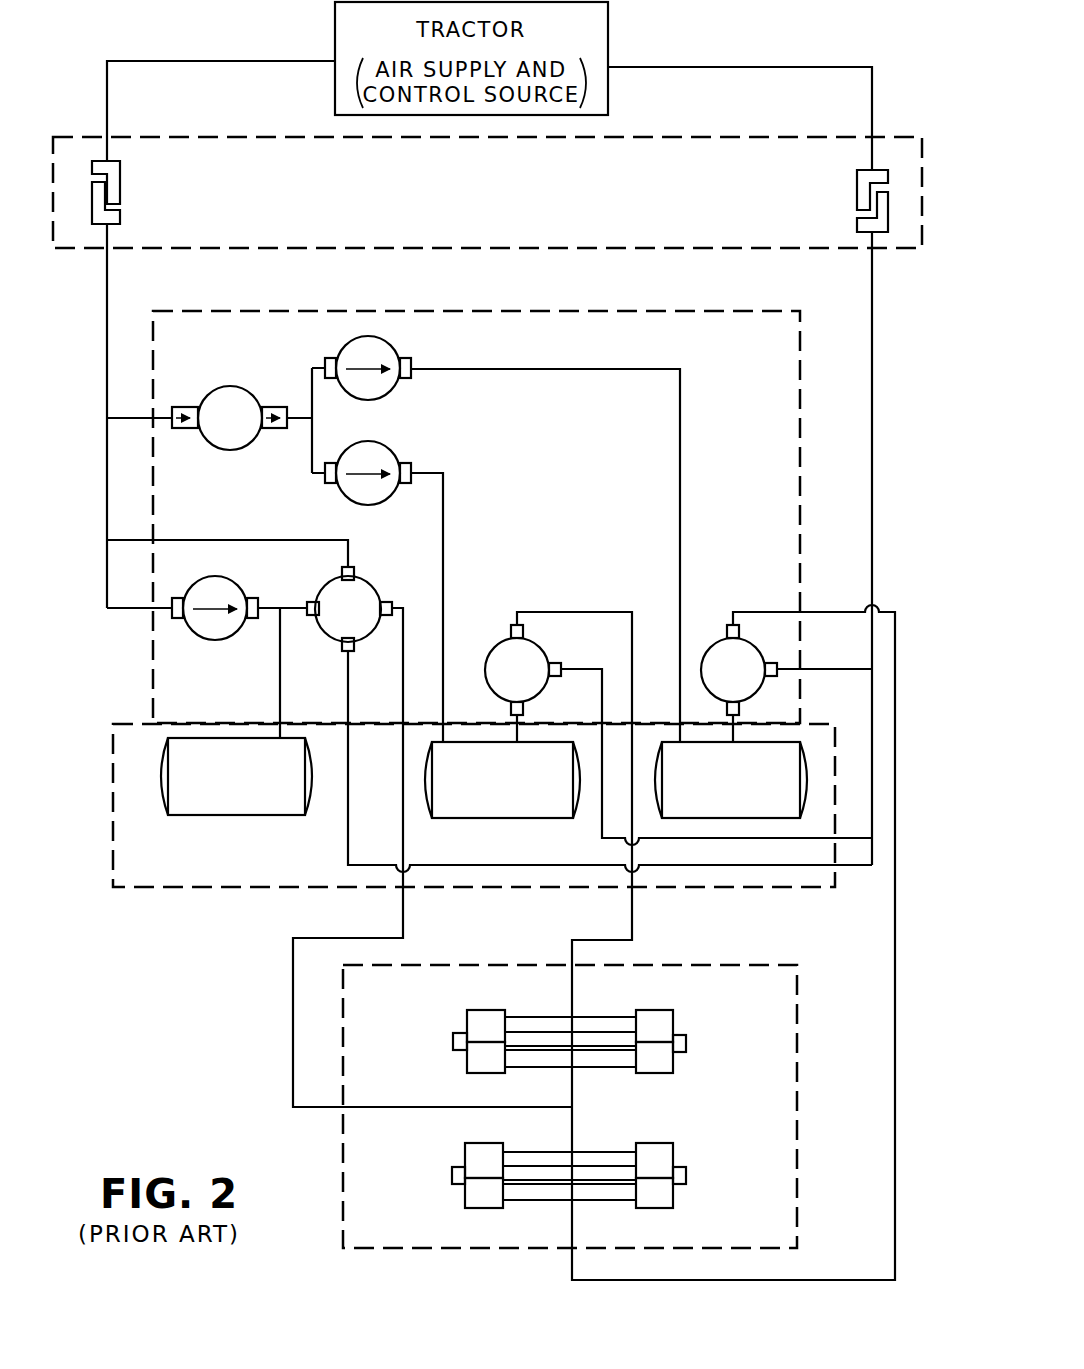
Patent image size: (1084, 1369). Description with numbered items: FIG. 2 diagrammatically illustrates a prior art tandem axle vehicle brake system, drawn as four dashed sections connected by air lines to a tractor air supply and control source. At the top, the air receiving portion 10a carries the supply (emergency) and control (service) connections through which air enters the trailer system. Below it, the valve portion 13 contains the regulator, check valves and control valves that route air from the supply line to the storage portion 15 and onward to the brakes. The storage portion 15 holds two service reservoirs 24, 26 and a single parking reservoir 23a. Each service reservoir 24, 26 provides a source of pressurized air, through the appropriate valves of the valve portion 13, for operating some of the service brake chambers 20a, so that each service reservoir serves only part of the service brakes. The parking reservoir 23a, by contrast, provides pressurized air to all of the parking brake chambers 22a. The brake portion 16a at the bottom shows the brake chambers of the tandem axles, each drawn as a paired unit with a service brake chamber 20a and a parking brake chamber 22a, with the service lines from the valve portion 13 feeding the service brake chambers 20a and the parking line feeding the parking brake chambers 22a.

The air receiving portion 10a is at (913, 138).
The valve portion 13 is at (804, 353).
The storage portion 15 is at (441, 805).
The parking reservoir 23a is at (217, 817).
The service reservoir 26 is at (481, 820).
The service reservoir 24 is at (703, 820).
The brake portion 16a is at (607, 1106).
The service brake chambers 20a is at (467, 1019).
The parking brake chambers 22a is at (467, 1066).